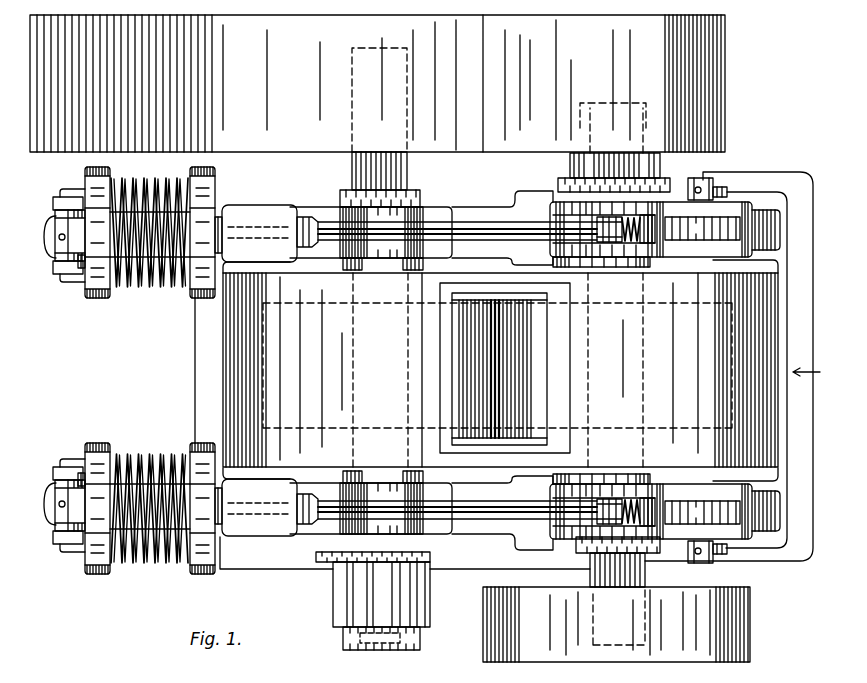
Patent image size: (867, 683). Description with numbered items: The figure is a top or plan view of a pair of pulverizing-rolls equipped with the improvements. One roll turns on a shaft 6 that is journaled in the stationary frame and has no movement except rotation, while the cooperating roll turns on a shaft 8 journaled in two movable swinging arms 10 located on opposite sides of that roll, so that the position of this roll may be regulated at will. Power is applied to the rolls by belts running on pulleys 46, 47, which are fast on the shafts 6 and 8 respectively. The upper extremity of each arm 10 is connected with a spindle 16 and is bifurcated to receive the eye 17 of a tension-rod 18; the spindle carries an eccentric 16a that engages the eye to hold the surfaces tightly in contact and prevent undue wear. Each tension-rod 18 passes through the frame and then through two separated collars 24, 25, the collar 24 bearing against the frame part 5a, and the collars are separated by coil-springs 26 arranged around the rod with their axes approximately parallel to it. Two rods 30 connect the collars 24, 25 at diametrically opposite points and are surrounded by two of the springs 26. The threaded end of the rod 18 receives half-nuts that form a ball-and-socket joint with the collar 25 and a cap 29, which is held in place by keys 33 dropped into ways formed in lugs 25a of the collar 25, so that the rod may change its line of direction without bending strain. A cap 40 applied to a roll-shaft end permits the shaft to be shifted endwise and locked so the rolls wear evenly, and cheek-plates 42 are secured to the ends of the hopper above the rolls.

The pulley 47 is at (377, 83).
The pulley 46 is at (616, 624).
The shaft 6 is at (409, 170).
The shaft 8 is at (593, 574).
The swinging arm 10 is at (770, 192).
The spindle 16 is at (713, 187).
The eccentric 16a is at (725, 188).
The eye 17 is at (690, 228).
The tension-rod 18 is at (514, 241).
The collar 24 is at (198, 298).
The collar 25 is at (97, 298).
The lug 25a is at (80, 555).
The coil-spring 26 is at (148, 290).
The cap 29 is at (52, 247).
The rod 30 is at (252, 220).
The key 33 is at (55, 203).
The cap 40 is at (710, 163).
The cheek-plate 42 is at (489, 305).
The frame part 5a is at (258, 540).